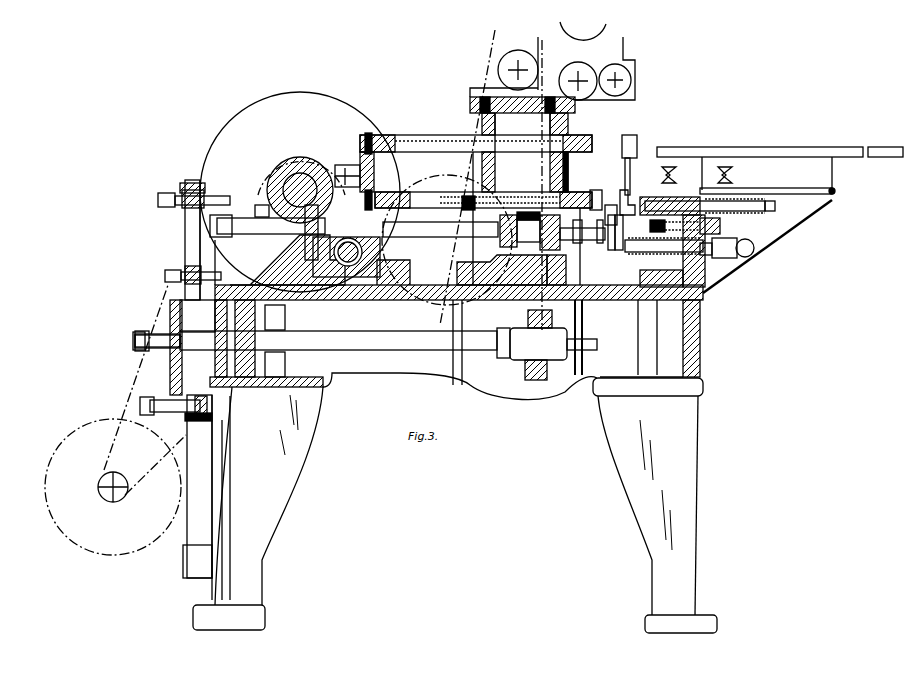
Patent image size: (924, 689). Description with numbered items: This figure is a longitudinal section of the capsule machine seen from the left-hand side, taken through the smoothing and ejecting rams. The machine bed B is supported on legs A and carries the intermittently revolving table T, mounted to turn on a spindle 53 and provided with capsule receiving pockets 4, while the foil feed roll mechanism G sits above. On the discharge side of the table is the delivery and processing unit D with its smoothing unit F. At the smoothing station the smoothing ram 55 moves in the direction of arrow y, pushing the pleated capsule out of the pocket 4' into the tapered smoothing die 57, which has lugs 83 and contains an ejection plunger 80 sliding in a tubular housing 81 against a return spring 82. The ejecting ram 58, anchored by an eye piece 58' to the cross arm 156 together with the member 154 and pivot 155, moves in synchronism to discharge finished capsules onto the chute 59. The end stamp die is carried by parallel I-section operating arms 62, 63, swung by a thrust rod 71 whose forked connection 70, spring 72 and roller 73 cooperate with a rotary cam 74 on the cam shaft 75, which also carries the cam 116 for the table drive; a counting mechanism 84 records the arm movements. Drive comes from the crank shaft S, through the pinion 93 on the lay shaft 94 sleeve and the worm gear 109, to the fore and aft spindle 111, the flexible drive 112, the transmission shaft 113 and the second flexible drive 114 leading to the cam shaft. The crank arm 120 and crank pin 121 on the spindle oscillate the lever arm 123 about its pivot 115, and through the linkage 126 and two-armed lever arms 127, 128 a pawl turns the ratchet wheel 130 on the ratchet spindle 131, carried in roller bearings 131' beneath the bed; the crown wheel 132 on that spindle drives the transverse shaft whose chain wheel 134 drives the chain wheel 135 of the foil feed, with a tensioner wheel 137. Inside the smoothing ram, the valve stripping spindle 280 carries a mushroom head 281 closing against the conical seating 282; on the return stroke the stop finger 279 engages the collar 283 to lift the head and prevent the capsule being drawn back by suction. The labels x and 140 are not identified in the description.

The legs A is at (455, 505).
The bed B is at (456, 319).
The delivery and processing unit D is at (780, 148).
The smoothing unit F is at (653, 171).
The feed roll mechanism G is at (552, 107).
The crank shaft S is at (312, 168).
The intermittently revolving table T is at (622, 158).
The bolt x is at (710, 238).
The arrow Y y is at (615, 197).
The pocket 4 is at (629, 132).
The pocket 4' is at (630, 186).
The spindle 53 is at (578, 195).
The smoothing ram 55 is at (346, 257).
The tapered smoothing die 57 is at (660, 198).
The ejecting ram 58 is at (583, 136).
The eye piece 58' is at (476, 132).
The chute 59 is at (712, 147).
The operating arm 62 is at (672, 165).
The operating arm 63 is at (727, 165).
The forked end 70 is at (732, 243).
The thrust rod 71 is at (664, 252).
The spring 72 is at (690, 265).
The roller 73 is at (607, 241).
The rotary cam 74 is at (624, 241).
The cam shaft 75 is at (585, 240).
The ejection plunger 80 is at (672, 204).
The tubular housing 81 is at (740, 190).
The return spring 82 is at (772, 204).
The lugs 83 is at (677, 225).
The counting mechanism 84 is at (735, 250).
The pinion 93 is at (412, 267).
The lay shaft 94 is at (354, 252).
The worm gear 109 is at (300, 172).
The fore and aft spindle 111 is at (250, 235).
The flexible drive 112 is at (398, 198).
The transmission shaft 113 is at (432, 222).
The second flexible drive 114 is at (513, 247).
The pivot 115 is at (166, 276).
The cam 116 is at (614, 213).
The crank arm 120 is at (226, 198).
The crank pin 121 is at (188, 183).
The lever arm 123 is at (186, 210).
The linkage 126 is at (180, 302).
The lever arm 127 is at (178, 318).
The lever arm 128 is at (186, 245).
The ratchet wheel 130 is at (182, 368).
The ratchet spindle 131 is at (206, 486).
The roller bearings 131' is at (273, 338).
The crown wheel 132 is at (540, 378).
The chain wheel 134 is at (500, 362).
The chain wheel 135 is at (500, 50).
The tensioner wheel 137 is at (455, 326).
The bracket 140 is at (322, 208).
The member 154 is at (364, 165).
The pivot 155 is at (372, 178).
The cross arm 156 is at (365, 186).
The stop finger 279 is at (452, 216).
The valve stripping spindle 280 is at (528, 197).
The mushroom head 281 is at (598, 200).
The conical seating 282 is at (572, 185).
The collar 283 is at (466, 196).